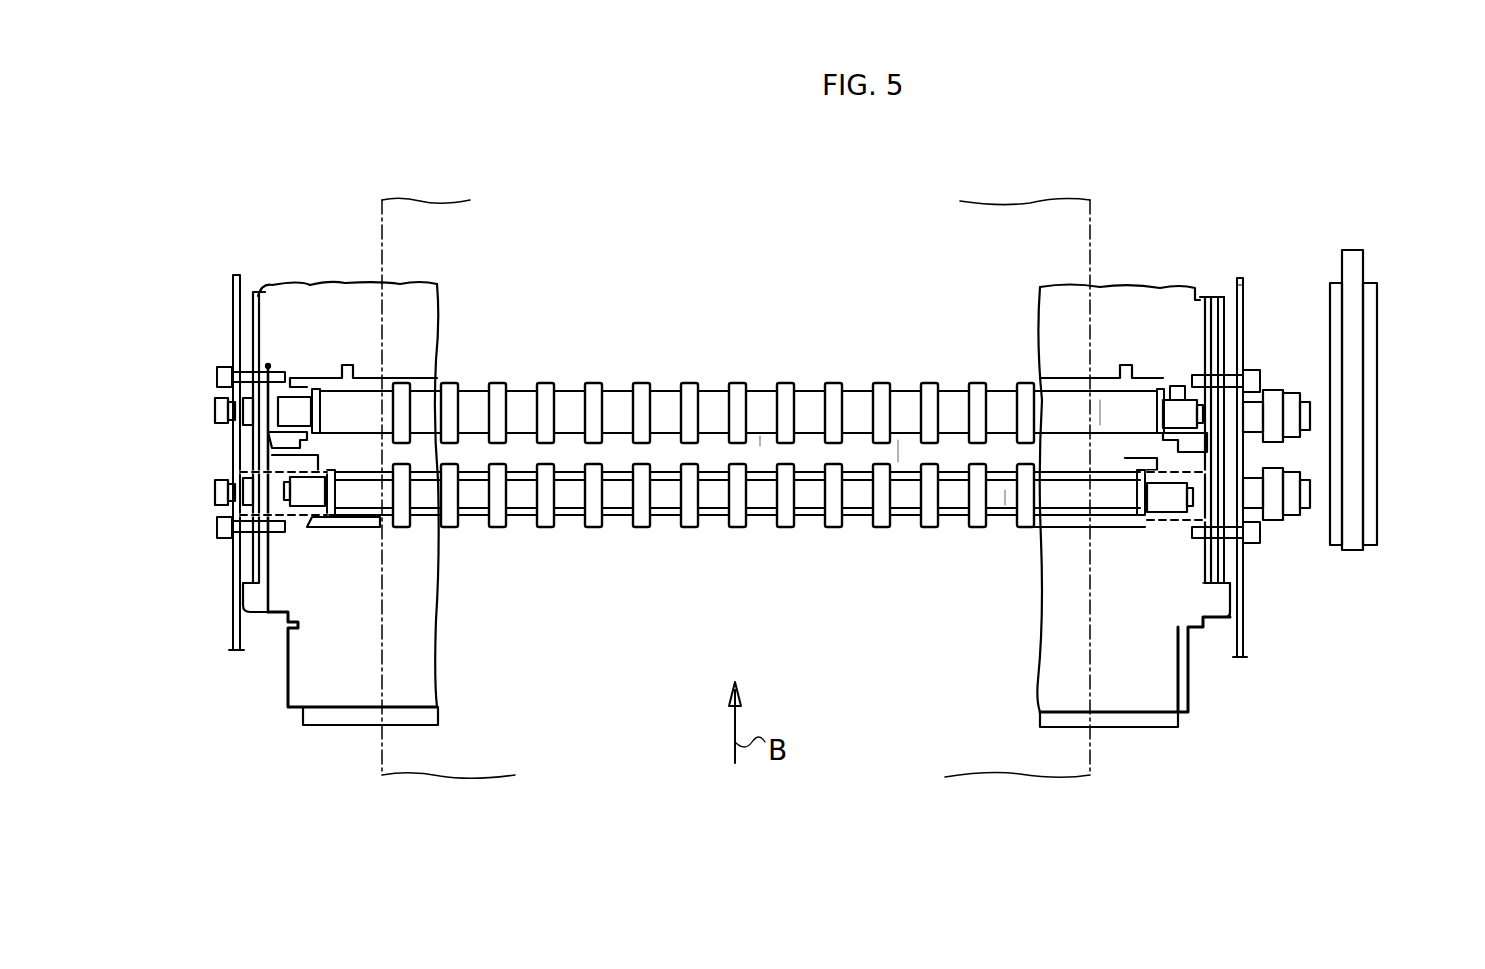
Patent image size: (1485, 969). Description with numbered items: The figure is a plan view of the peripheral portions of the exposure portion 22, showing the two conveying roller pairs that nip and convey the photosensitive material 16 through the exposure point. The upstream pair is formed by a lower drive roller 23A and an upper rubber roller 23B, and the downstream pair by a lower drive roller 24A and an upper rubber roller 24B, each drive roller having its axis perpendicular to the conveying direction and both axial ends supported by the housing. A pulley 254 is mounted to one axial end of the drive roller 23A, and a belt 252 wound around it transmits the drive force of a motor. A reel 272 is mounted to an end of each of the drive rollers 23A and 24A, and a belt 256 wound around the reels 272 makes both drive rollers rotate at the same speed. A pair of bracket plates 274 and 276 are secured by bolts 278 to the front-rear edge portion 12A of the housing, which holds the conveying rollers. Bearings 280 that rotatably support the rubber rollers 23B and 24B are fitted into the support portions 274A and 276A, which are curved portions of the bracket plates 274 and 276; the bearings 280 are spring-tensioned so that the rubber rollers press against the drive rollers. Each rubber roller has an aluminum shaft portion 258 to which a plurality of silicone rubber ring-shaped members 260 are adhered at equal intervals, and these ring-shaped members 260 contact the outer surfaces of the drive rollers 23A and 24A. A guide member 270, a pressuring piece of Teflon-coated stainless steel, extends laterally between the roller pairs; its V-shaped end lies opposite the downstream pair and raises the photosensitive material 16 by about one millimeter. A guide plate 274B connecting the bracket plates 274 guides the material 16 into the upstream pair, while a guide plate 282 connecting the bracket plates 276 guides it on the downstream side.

The front-rear edge portion 12A is at (233, 296).
The photosensitive material 16 is at (382, 766).
The exposure portion 22 is at (900, 455).
The drive roller 23A is at (1233, 620).
The rubber roller 23B is at (665, 492).
The drive roller 24A is at (1241, 290).
The rubber roller 24B is at (665, 390).
The belt 252 is at (1352, 263).
The pulley 254 is at (1336, 290).
The belt 256 is at (1290, 396).
The shaft portion 258 is at (1100, 406).
The ring-shaped member 260 is at (833, 390).
The guide member 270 is at (765, 440).
The reel 272 is at (1263, 402).
The bracket plate 274 is at (268, 365).
The support portion 274A is at (340, 528).
The guide plate 274B is at (322, 672).
The bracket plate 276 is at (259, 300).
The support portion 276A is at (300, 437).
The bolt 278 is at (221, 380).
The bearing 280 is at (296, 400).
The guide plate 282 is at (362, 302).